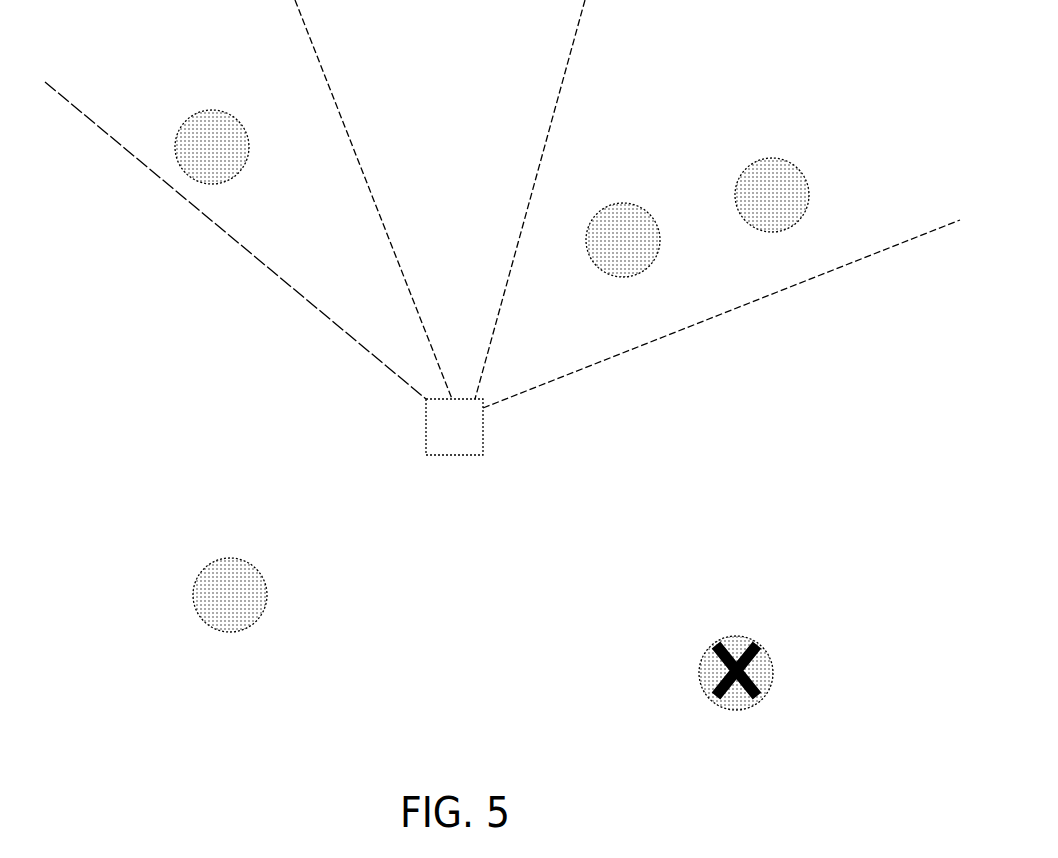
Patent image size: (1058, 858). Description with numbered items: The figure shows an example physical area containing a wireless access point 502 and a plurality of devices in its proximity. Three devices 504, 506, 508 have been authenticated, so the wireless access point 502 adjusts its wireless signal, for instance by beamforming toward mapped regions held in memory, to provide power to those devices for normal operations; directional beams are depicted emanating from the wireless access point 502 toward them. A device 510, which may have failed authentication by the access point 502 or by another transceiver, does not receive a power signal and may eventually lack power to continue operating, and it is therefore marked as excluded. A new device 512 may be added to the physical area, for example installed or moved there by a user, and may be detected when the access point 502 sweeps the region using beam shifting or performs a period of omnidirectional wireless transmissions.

The wireless access point 502 is at (440, 443).
The device 504 is at (197, 120).
The device 506 is at (630, 213).
The device 508 is at (757, 173).
The device 510 is at (705, 663).
The new device 512 is at (220, 575).